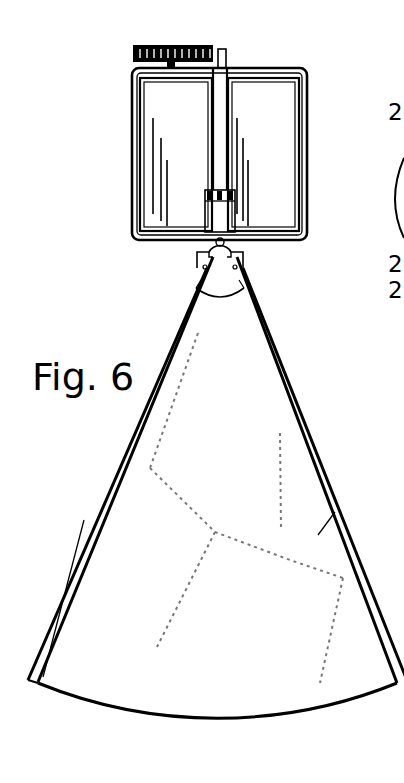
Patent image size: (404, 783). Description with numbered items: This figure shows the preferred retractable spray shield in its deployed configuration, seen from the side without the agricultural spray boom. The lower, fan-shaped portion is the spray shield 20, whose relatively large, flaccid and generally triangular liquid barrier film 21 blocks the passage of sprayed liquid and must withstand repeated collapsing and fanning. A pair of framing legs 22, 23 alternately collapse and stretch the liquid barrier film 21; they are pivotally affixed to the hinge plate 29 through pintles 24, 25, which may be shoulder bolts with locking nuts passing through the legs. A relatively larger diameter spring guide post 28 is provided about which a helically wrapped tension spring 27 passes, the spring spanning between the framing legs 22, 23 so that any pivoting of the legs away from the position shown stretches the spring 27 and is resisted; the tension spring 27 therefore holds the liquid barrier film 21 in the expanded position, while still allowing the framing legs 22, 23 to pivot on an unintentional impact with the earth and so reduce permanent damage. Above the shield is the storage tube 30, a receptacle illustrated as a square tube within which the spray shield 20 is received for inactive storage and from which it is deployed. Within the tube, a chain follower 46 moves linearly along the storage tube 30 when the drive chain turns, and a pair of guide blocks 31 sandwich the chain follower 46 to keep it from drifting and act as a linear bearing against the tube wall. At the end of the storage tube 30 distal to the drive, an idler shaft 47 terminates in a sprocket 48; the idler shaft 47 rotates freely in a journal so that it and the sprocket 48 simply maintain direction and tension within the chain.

The spray shield 20 is at (287, 376).
The liquid barrier film 21 is at (316, 535).
The framing leg 22 is at (84, 520).
The framing leg 23 is at (315, 455).
The pintle 24 is at (195, 287).
The pintle 25 is at (249, 287).
The tension spring 27 is at (243, 247).
The spring guide post 28 is at (197, 245).
The hinge plate 29 is at (236, 217).
The storage tube 30 is at (309, 153).
The guide blocks 31 is at (150, 105).
The chain follower 46 is at (220, 103).
The idler shaft 47 is at (167, 65).
The sprocket 48 is at (136, 47).